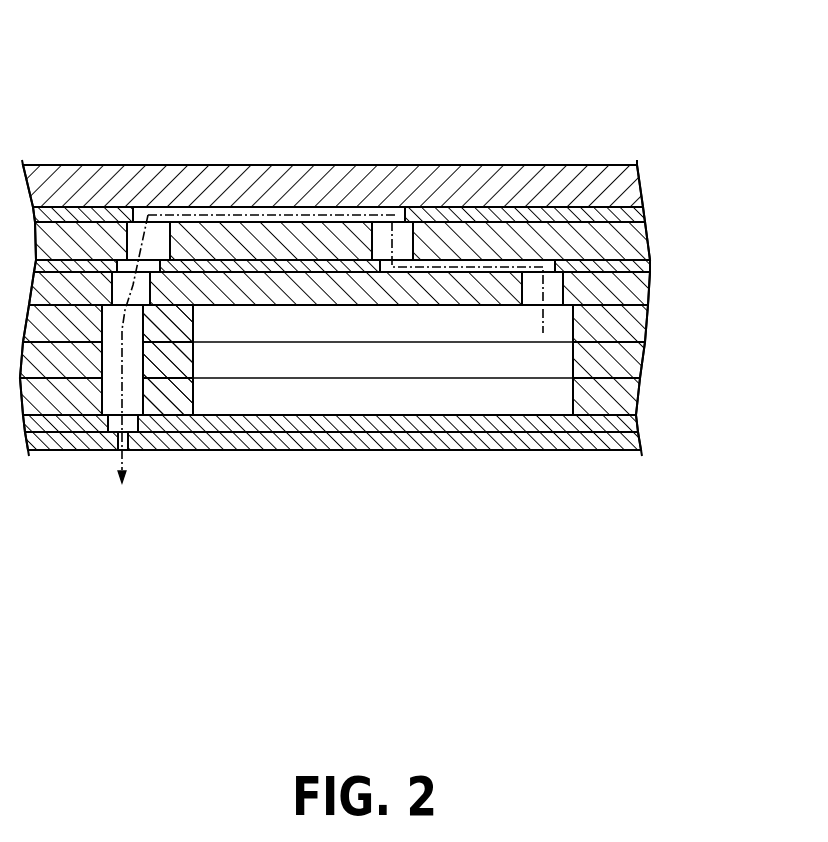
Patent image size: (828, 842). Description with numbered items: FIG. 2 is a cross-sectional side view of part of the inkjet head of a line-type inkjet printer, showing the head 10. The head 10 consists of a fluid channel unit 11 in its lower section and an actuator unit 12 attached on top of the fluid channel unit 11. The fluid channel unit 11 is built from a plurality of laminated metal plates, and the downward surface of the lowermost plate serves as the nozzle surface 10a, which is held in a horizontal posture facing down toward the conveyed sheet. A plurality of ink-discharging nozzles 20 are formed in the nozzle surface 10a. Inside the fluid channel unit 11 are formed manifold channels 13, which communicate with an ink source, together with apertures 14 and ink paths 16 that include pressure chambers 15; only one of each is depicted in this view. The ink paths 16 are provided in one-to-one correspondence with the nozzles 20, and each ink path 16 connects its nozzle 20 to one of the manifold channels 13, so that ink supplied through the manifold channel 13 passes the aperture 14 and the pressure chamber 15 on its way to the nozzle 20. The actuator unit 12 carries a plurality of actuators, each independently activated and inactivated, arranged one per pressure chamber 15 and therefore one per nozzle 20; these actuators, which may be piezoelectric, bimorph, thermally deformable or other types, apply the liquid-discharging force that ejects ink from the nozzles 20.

The head 10 is at (138, 152).
The nozzle surface 10a is at (425, 452).
The fluid channel unit 11 is at (374, 294).
The actuator unit 12 is at (628, 191).
The manifold channel 13 is at (193, 393).
The aperture 14 is at (473, 265).
The pressure chamber 15 is at (285, 209).
The ink path 16 is at (190, 211).
The nozzle 20 is at (123, 452).